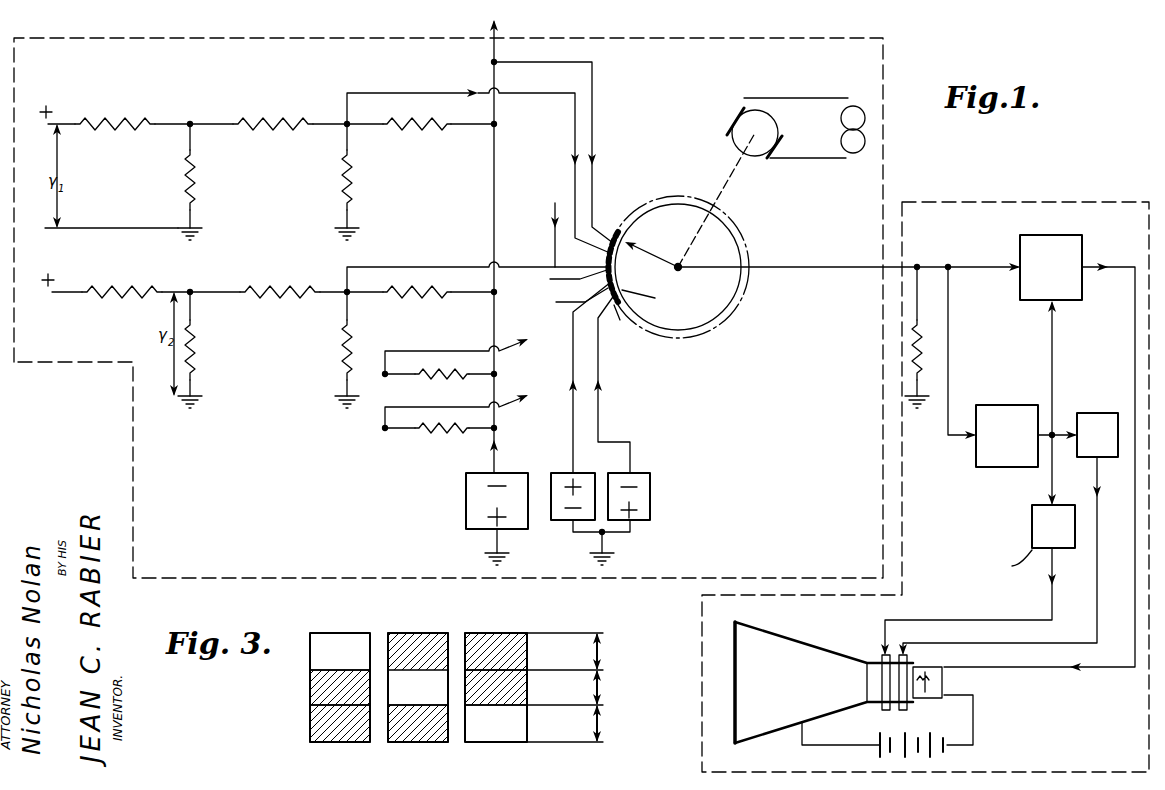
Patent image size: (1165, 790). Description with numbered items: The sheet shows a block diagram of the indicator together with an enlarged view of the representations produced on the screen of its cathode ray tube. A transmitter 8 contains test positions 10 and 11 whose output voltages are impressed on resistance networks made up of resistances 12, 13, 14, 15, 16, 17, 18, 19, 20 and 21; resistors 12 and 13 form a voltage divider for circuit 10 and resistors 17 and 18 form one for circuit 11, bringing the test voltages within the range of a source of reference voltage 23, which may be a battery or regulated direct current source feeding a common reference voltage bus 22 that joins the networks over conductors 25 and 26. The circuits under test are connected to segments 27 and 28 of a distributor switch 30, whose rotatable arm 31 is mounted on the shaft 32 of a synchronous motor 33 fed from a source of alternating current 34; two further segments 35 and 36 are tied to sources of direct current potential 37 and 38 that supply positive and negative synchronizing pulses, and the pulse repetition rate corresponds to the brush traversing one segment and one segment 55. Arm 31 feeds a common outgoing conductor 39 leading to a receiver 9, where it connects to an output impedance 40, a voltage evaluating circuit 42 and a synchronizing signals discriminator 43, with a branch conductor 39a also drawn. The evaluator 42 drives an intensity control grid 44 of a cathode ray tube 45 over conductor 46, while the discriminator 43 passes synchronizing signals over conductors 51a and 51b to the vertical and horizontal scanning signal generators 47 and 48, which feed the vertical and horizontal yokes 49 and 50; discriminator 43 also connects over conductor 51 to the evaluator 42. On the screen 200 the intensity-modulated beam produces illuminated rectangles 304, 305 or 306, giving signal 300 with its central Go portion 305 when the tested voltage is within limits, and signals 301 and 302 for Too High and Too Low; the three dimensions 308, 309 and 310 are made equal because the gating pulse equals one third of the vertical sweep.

In FIG. 1, the transmitter 8 is at (131, 395).
In FIG. 1, the receiver 9 is at (1046, 200).
In FIG. 1, the test position 10 is at (62, 123).
In FIG. 1, the test position 11 is at (72, 290).
In FIG. 1, the resistor 12 is at (122, 123).
In FIG. 1, the resistor 13 is at (195, 188).
In FIG. 1, the resistance 14 is at (275, 123).
In FIG. 1, the resistance 15 is at (352, 197).
In FIG. 1, the resistance 16 is at (415, 128).
In FIG. 1, the resistor 17 is at (114, 300).
In FIG. 1, the resistor 18 is at (196, 348).
In FIG. 1, the resistance 19 is at (284, 300).
In FIG. 1, the resistance 20 is at (342, 373).
In FIG. 1, the resistance 21 is at (434, 300).
In FIG. 1, the common reference voltage bus 22 is at (497, 178).
In FIG. 1, the source of reference voltage 23 is at (465, 499).
In FIG. 1, the conductor 25 is at (541, 96).
In FIG. 1, the conductor 26 is at (526, 265).
In FIG. 1, the segment 27 is at (614, 236).
In FIG. 1, the segment 28 is at (565, 279).
In FIG. 1, the distributor switch 30 is at (666, 190).
In FIG. 1, the rotatable arm 31 is at (655, 270).
In FIG. 1, the shaft 32 is at (730, 195).
In FIG. 1, the synchronous motor 33 is at (762, 110).
In FIG. 1, the source of alternating current 34 is at (853, 153).
In FIG. 1, the segment 35 is at (569, 300).
In FIG. 1, the segment 36 is at (620, 323).
In FIG. 1, the source of direct current potential 37 is at (556, 530).
In FIG. 1, the source of direct current potential 38 is at (652, 499).
In FIG. 1, the common outgoing conductor 39 is at (790, 266).
In FIG. 1, the branch conductor 39a is at (950, 330).
In FIG. 1, the output impedance 40 is at (922, 330).
In FIG. 1, the voltage evaluating circuit 42 is at (1072, 236).
In FIG. 1, the synchronizing signals discriminator 43 is at (976, 460).
In FIG. 1, the intensity control grid 44 is at (935, 683).
In FIG. 1, the cathode ray tube 45 is at (762, 636).
In FIG. 1, the conductor 46 is at (1135, 330).
In FIG. 1, the vertical scanning signal generator 47 is at (1097, 413).
In FIG. 1, the horizontal scanning signal generator 48 is at (1032, 526).
In FIG. 1, the vertical scanning yoke 49 is at (912, 647).
In FIG. 1, the horizontal scanning yoke 50 is at (878, 650).
In FIG. 1, the conductor 51 is at (1052, 359).
In FIG. 1, the conductor 51a is at (1060, 428).
In FIG. 1, the conductor 51b is at (1058, 460).
In FIG. 1, the segment 55 is at (646, 301).
In FIG. 1, the screen 200 is at (735, 685).
In FIG. 3, the signal 300 is at (442, 633).
In FIG. 3, the signal 301 is at (365, 633).
In FIG. 3, the signal 302 is at (525, 633).
In FIG. 3, the illuminated rectangle 304 is at (310, 661).
In FIG. 3, the illuminated rectangle 305 is at (415, 702).
In FIG. 3, the illuminated rectangle 306 is at (528, 722).
In FIG. 3, the dimension 308 is at (600, 651).
In FIG. 3, the dimension 309 is at (600, 687).
In FIG. 3, the dimension 310 is at (600, 723).